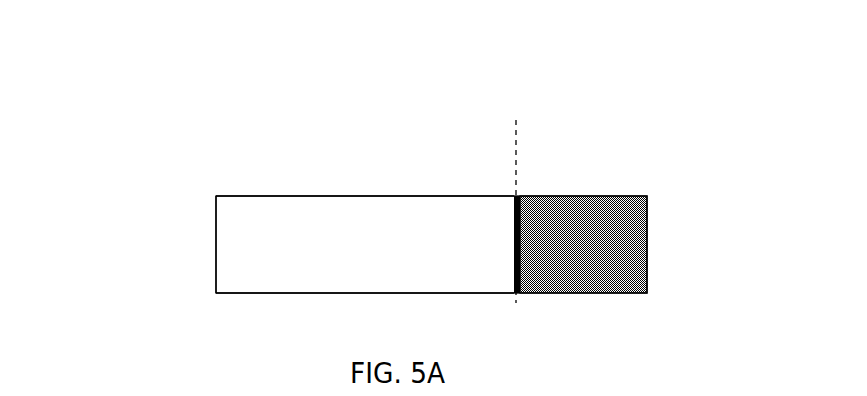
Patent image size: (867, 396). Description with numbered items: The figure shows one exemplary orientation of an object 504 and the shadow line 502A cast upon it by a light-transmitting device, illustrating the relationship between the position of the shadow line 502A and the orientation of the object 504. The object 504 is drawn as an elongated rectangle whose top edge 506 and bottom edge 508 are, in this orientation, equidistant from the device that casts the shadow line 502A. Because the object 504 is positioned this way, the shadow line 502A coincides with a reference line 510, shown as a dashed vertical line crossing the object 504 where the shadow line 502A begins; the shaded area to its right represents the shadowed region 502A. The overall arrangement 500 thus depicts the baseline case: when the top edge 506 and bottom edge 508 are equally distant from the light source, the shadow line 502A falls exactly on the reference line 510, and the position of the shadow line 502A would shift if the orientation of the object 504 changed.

The cooling element assembly 500 is at (111, 114).
The shadow line 502A is at (520, 255).
The object 504 is at (216, 255).
The top edge 506 is at (332, 196).
The bottom edge 508 is at (282, 293).
The reference line 510 is at (515, 147).